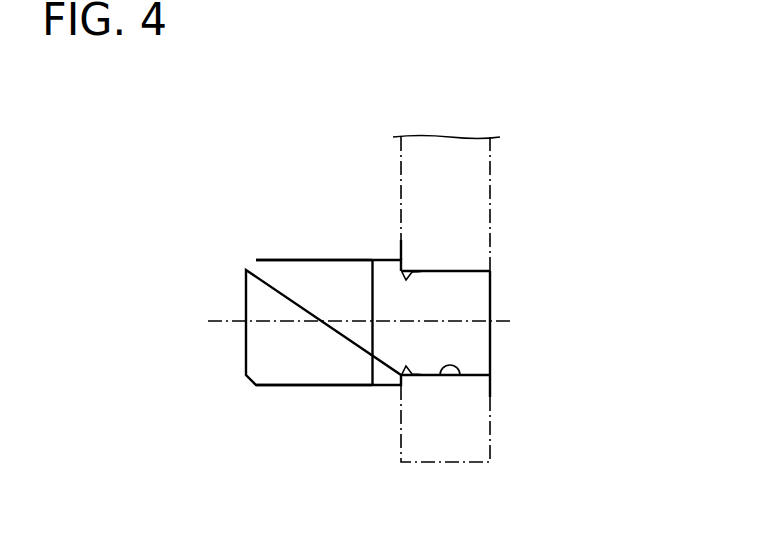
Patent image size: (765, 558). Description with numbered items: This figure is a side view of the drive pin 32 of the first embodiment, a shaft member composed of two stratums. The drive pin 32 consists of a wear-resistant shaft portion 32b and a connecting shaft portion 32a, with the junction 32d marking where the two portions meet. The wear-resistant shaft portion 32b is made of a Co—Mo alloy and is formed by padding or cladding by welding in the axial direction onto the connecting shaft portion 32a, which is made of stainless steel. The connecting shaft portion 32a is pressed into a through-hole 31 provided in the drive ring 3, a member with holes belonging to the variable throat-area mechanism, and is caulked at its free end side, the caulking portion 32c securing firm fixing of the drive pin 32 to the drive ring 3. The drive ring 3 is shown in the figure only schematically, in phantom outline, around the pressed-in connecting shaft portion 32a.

The drive ring 3 is at (457, 143).
The through-hole 31 is at (462, 367).
The drive pin 32 is at (293, 231).
The connecting shaft portion 32a is at (493, 347).
The wear-resistant shaft portion 32b is at (315, 366).
The caulking portion 32c is at (491, 270).
The junction 32d is at (370, 358).